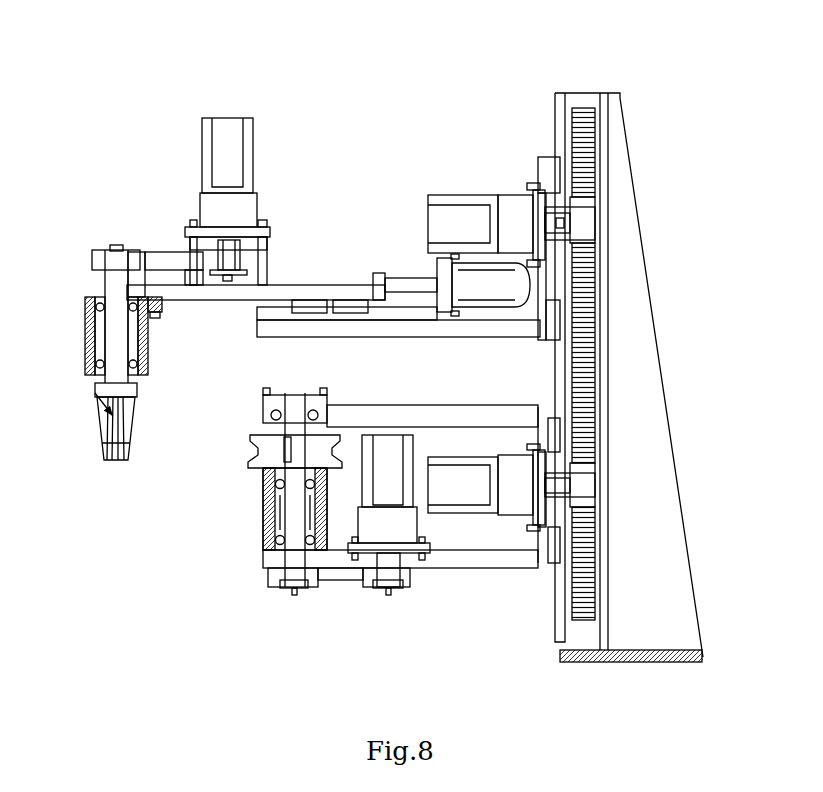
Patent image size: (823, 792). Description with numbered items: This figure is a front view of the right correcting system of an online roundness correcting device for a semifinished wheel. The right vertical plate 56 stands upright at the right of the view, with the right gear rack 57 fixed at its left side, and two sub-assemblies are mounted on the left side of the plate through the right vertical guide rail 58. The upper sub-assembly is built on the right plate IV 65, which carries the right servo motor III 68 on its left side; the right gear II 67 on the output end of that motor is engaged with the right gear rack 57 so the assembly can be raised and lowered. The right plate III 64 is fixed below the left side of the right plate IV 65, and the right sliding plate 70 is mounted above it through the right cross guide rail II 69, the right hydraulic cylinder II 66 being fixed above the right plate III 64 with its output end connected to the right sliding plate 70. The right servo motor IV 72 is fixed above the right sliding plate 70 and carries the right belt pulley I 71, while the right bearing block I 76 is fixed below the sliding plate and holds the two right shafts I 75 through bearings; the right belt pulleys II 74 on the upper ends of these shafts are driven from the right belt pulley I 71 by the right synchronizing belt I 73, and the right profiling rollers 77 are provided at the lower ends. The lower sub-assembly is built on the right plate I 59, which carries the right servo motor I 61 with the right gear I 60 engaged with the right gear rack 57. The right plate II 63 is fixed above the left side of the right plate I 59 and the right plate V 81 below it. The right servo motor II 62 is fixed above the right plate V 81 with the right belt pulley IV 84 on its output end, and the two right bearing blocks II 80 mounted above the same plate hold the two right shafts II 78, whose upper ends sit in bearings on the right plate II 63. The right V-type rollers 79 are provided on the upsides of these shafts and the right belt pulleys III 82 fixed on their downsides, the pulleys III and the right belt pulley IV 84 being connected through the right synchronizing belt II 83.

The right vertical plate 56 is at (603, 618).
The right gear rack 57 is at (583, 573).
The right vertical guide rail 58 is at (560, 541).
The right plate I 59 is at (552, 517).
The right gear I 60 is at (583, 498).
The right servo motor I 61 is at (517, 482).
The right servo motor II 62 is at (390, 493).
The right plate II 63 is at (500, 418).
The right plate III 64 is at (510, 327).
The right plate IV 65 is at (550, 310).
The right hydraulic cylinder II 66 is at (499, 282).
The right gear II 67 is at (580, 236).
The right servo motor III 68 is at (580, 196).
The right cross guide rail II 69 is at (388, 315).
The right sliding plate 70 is at (345, 285).
The right belt pulley I 71 is at (245, 262).
The right servo motor IV 72 is at (228, 208).
The right synchronizing belt I 73 is at (167, 267).
The right belt pulley II 74 is at (133, 258).
The right shaft I 75 is at (116, 295).
The right bearing block I 76 is at (89, 303).
The right profiling roller 77 is at (87, 362).
The right shaft II 78 is at (285, 417).
The right V-type roller 79 is at (265, 450).
The right bearing block II 80 is at (263, 497).
The right plate V 81 is at (263, 560).
The right belt pulley III 82 is at (277, 575).
The right synchronizing belt II 83 is at (345, 578).
The right belt pulley IV 84 is at (400, 588).